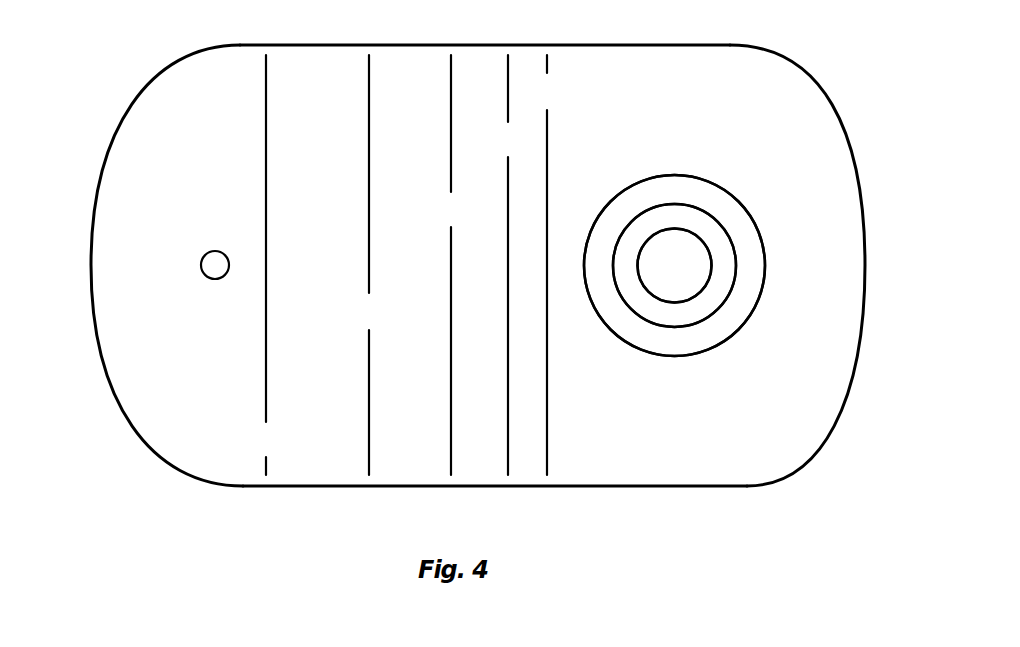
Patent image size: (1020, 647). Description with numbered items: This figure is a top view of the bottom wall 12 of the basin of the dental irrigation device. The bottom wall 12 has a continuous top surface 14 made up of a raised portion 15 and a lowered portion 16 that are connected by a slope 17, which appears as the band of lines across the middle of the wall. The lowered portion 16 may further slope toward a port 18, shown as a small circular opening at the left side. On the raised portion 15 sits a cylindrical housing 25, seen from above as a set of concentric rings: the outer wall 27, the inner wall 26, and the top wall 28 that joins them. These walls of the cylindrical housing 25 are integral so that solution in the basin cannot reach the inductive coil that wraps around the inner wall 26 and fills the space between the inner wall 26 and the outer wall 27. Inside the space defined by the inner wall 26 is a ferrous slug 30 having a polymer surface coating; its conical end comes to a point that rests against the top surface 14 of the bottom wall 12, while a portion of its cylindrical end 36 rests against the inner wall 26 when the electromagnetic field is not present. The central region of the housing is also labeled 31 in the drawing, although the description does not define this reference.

The bottom wall 12 is at (185, 130).
The top surface 14 is at (790, 432).
The raised portion 15 is at (712, 443).
The lowered portion 16 is at (177, 402).
The slope 17 is at (485, 428).
The port 18 is at (201, 262).
The cylindrical housing 25 is at (703, 177).
The inner wall 26 is at (728, 233).
The outer wall 27 is at (727, 193).
The top wall 28 is at (745, 293).
The ferrous slug 30 is at (713, 273).
The center button 31 is at (689, 278).
The cylindrical end 36 is at (673, 240).